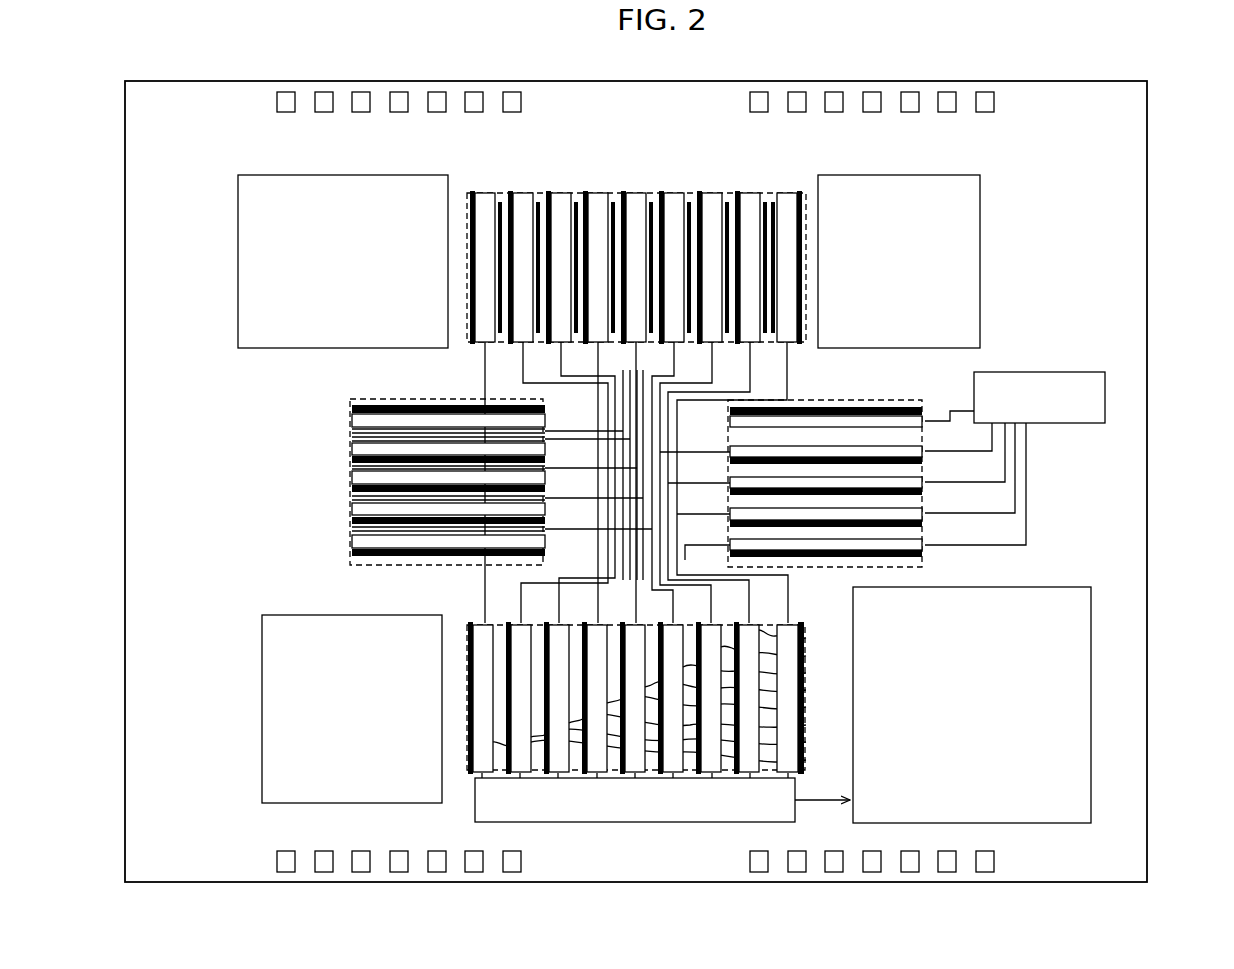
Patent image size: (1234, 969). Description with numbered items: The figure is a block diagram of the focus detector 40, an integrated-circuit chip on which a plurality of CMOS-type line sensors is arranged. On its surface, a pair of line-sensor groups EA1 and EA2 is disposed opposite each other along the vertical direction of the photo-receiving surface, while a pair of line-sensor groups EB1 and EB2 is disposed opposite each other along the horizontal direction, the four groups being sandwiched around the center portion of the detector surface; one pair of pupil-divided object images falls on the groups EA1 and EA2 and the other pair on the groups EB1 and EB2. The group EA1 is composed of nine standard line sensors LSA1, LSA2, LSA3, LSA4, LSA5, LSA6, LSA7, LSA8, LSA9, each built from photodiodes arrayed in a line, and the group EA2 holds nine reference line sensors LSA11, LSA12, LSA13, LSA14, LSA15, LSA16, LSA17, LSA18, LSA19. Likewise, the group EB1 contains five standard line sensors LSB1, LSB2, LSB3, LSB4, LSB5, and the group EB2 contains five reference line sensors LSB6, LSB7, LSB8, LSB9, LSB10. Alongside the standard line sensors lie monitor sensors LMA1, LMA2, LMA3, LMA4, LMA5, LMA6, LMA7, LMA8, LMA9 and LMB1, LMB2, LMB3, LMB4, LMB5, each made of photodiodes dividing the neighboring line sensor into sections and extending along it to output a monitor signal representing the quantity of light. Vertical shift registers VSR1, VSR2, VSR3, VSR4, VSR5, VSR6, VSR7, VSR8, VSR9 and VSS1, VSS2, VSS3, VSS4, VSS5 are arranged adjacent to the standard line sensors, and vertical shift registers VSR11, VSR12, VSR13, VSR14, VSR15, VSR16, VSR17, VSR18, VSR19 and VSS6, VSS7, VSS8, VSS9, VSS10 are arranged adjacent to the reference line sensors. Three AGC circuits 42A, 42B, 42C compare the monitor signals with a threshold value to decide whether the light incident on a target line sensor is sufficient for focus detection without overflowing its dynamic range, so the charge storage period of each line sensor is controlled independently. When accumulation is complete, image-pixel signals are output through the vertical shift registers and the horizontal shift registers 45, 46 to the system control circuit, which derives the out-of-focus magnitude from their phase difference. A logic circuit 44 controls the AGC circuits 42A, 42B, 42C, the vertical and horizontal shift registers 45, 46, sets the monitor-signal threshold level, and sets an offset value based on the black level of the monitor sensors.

The focus detector 40 is at (1172, 138).
The AGC circuit 42A is at (238, 262).
The AGC circuit 42B is at (980, 263).
The AGC circuit 42C is at (262, 710).
The logic circuit 44 is at (1091, 706).
The horizontal shift register 45 is at (1042, 372).
The horizontal shift register 46 is at (635, 822).
The line-sensor group EA1 is at (467, 342).
The line-sensor group EA2 is at (467, 765).
The line-sensor group EB1 is at (405, 400).
The line-sensor group EB2 is at (870, 400).
The vertical shift register VSR1 is at (472, 191).
The vertical shift register VSR2 is at (510, 191).
The vertical shift register VSR3 is at (548, 191).
The vertical shift register VSR4 is at (585, 191).
The vertical shift register VSR5 is at (623, 191).
The vertical shift register VSR6 is at (661, 191).
The vertical shift register VSR7 is at (699, 191).
The vertical shift register VSR8 is at (737, 191).
The vertical shift register VSR9 is at (800, 191).
The vertical shift register VSR11 is at (470, 622).
The vertical shift register VSR12 is at (508, 622).
The vertical shift register VSR13 is at (546, 622).
The vertical shift register VSR14 is at (584, 622).
The vertical shift register VSR15 is at (622, 622).
The vertical shift register VSR16 is at (660, 622).
The vertical shift register VSR17 is at (698, 622).
The vertical shift register VSR18 is at (736, 622).
The vertical shift register VSR19 is at (801, 622).
The line sensor LSA1 is at (485, 193).
The line sensor LSA2 is at (523, 193).
The line sensor LSA3 is at (561, 193).
The line sensor LSA4 is at (598, 193).
The line sensor LSA5 is at (636, 193).
The line sensor LSA6 is at (674, 193).
The line sensor LSA7 is at (712, 193).
The line sensor LSA8 is at (750, 193).
The line sensor LSA9 is at (787, 193).
The line sensor LSA11 is at (806, 760).
The line sensor LSA12 is at (806, 742).
The line sensor LSA13 is at (806, 725).
The line sensor LSA14 is at (806, 707).
The line sensor LSA15 is at (806, 690).
The line sensor LSA16 is at (806, 673).
The line sensor LSA17 is at (806, 656).
The line sensor LSA18 is at (806, 638).
The line sensor LSA19 is at (787, 625).
The monitor sensor LMA1 is at (500, 334).
The monitor sensor LMA2 is at (538, 334).
The monitor sensor LMA3 is at (576, 334).
The monitor sensor LMA4 is at (613, 334).
The monitor sensor LMA5 is at (651, 334).
The monitor sensor LMA6 is at (689, 334).
The monitor sensor LMA7 is at (727, 334).
The monitor sensor LMA8 is at (765, 334).
The monitor sensor LMA9 is at (773, 334).
The monitor sensor LMB1 is at (545, 431).
The monitor sensor LMB2 is at (545, 439).
The monitor sensor LMB3 is at (545, 468).
The monitor sensor LMB4 is at (545, 498).
The monitor sensor LMB5 is at (545, 529).
The line sensor LSB1 is at (352, 420).
The line sensor LSB2 is at (352, 449).
The line sensor LSB3 is at (352, 477).
The line sensor LSB4 is at (352, 509).
The line sensor LSB5 is at (352, 541).
The line sensor LSB6 is at (922, 421).
The line sensor LSB7 is at (730, 452).
The line sensor LSB8 is at (730, 483).
The line sensor LSB9 is at (730, 514).
The line sensor LSB10 is at (730, 545).
The vertical shift register VSS1 is at (352, 409).
The vertical shift register VSS2 is at (352, 459).
The vertical shift register VSS3 is at (352, 488).
The vertical shift register VSS4 is at (352, 520).
The vertical shift register VSS5 is at (352, 552).
The vertical shift register VSS6 is at (925, 410).
The vertical shift register VSS7 is at (922, 460).
The vertical shift register VSS8 is at (922, 491).
The vertical shift register VSS9 is at (922, 523).
The vertical shift register VSS10 is at (922, 553).